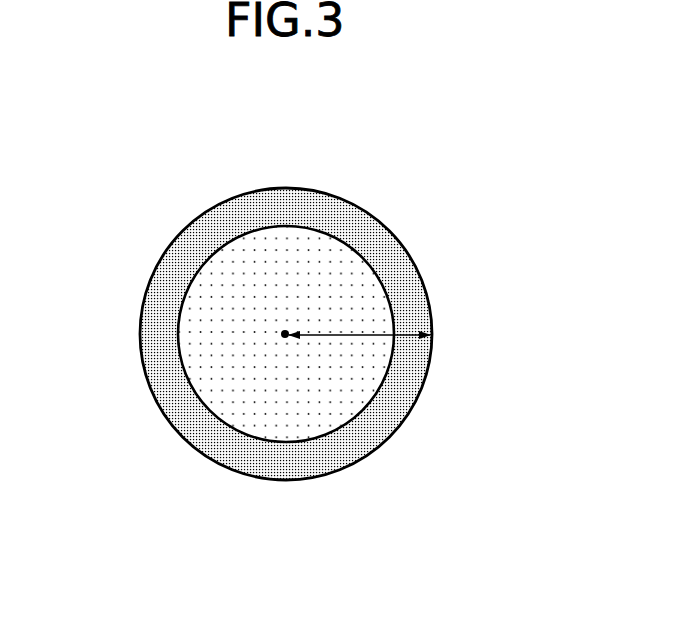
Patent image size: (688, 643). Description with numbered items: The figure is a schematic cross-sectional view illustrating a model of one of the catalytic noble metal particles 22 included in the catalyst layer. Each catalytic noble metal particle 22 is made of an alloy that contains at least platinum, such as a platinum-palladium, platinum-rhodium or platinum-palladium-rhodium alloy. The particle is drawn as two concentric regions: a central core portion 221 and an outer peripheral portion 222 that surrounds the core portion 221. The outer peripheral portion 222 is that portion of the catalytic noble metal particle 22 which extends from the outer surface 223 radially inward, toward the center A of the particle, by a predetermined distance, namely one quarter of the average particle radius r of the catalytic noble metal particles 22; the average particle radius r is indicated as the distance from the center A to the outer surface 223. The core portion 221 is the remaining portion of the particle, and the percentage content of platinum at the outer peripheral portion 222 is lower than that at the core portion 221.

The catalytic noble metal particle 22 is at (297, 294).
The core portion 221 is at (338, 395).
The outer peripheral portion 222 is at (224, 446).
The outer surface 223 is at (220, 202).
The center A is at (283, 334).
The average particle radius r is at (343, 334).